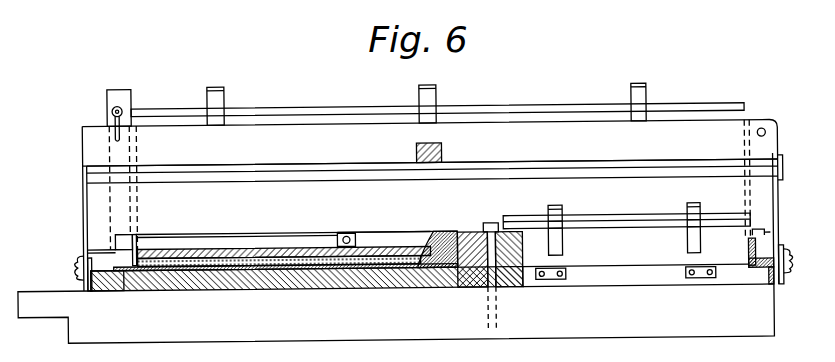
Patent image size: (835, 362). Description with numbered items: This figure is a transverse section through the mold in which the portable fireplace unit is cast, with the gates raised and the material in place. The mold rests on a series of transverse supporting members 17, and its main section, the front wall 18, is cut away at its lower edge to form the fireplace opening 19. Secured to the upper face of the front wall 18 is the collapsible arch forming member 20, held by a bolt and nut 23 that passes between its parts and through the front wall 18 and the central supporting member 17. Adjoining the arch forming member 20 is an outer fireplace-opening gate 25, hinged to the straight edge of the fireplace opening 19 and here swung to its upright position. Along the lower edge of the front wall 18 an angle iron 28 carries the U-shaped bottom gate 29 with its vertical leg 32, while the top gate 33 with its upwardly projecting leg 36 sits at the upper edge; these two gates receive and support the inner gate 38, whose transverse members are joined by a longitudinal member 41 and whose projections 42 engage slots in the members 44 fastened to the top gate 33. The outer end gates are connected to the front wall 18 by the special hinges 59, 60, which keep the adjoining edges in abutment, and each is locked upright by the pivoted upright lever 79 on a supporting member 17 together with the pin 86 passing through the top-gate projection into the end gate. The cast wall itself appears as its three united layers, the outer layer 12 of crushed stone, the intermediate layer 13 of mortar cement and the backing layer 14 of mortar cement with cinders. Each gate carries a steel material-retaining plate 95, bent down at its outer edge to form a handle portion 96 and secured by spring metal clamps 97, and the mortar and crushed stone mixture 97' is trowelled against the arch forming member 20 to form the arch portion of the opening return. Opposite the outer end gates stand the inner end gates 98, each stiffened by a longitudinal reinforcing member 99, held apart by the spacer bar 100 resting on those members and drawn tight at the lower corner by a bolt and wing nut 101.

The outer layer 12 is at (185, 272).
The intermediate layer 13 is at (245, 268).
The backing layer 14 is at (240, 250).
The transverse supporting member 17 is at (66, 331).
The front wall 18 is at (285, 291).
The fireplace opening 19 is at (671, 284).
The arch forming member 20 is at (470, 229).
The bolt and nut 23 is at (472, 281).
The outer fireplace-opening gate 25 is at (597, 265).
The angle iron 28 is at (770, 283).
The bottom gate 29 is at (742, 257).
The vertical leg 32 is at (748, 147).
The top gate 33 is at (121, 273).
The leg 36 is at (138, 148).
The inner gate 38 is at (398, 229).
The longitudinal member 41 is at (340, 235).
The projection 42 is at (122, 234).
The member 44 is at (140, 240).
The hinge 59 is at (788, 262).
The hinge 60 is at (76, 258).
The upright lever 79 is at (126, 85).
The pin 86 is at (112, 112).
The material-retaining plate 95 is at (666, 118).
The handle portion 96 is at (546, 109).
The spring metal clamp 97 is at (470, 162).
The mortar cement and crushed stone mixture 97' is at (439, 226).
The inner end gate 98 is at (306, 130).
The longitudinal reinforcing member 99 is at (232, 166).
The spacer bar 100 is at (442, 152).
The bolt and wing nut 101 is at (764, 134).